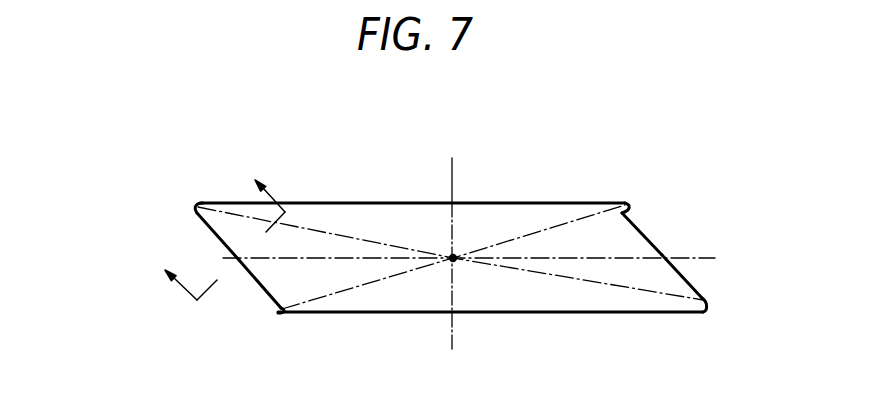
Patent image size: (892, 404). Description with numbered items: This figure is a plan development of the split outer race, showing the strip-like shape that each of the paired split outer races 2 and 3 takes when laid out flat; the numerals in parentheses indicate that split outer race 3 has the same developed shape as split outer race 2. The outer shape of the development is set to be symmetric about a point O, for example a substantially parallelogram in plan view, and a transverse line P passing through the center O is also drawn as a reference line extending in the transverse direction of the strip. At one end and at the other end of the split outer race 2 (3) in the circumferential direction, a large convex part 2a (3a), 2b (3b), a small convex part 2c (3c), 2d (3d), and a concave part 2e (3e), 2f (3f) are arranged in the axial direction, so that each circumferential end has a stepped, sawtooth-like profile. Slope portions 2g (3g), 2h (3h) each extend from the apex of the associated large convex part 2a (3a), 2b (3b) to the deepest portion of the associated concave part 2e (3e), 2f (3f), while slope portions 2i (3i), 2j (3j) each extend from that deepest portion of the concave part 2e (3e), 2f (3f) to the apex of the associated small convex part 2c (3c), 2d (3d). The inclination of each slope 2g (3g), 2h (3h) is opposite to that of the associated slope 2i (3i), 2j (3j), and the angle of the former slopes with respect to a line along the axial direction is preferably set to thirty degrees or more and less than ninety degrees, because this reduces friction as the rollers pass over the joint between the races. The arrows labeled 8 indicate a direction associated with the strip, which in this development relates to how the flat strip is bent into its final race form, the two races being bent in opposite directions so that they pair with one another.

The split outer race 2 is at (444, 244).
The split outer race 3 is at (444, 244).
The large convex part 2a is at (198, 206).
The large convex part 3a is at (185, 176).
The large convex part 2b is at (702, 299).
The large convex part 3b is at (751, 284).
The small convex part 2c is at (292, 313).
The small convex part 3c is at (490, 352).
The small convex part 2d is at (627, 203).
The small convex part 3d is at (430, 149).
The concave part 2e is at (258, 303).
The concave part 3e is at (226, 316).
The concave part 2f is at (643, 215).
The concave part 3f is at (686, 217).
The slope portion 2g is at (223, 243).
The slope portion 3g is at (163, 262).
The slope portion 2h is at (663, 257).
The slope portion 3h is at (728, 257).
The slope portion 2i is at (277, 314).
The slope portion 3i is at (265, 337).
The slope portion 2j is at (631, 209).
The slope portion 3j is at (671, 172).
The bending direction arrow 8 is at (227, 241).
The line P is at (453, 192).
The point O is at (458, 254).